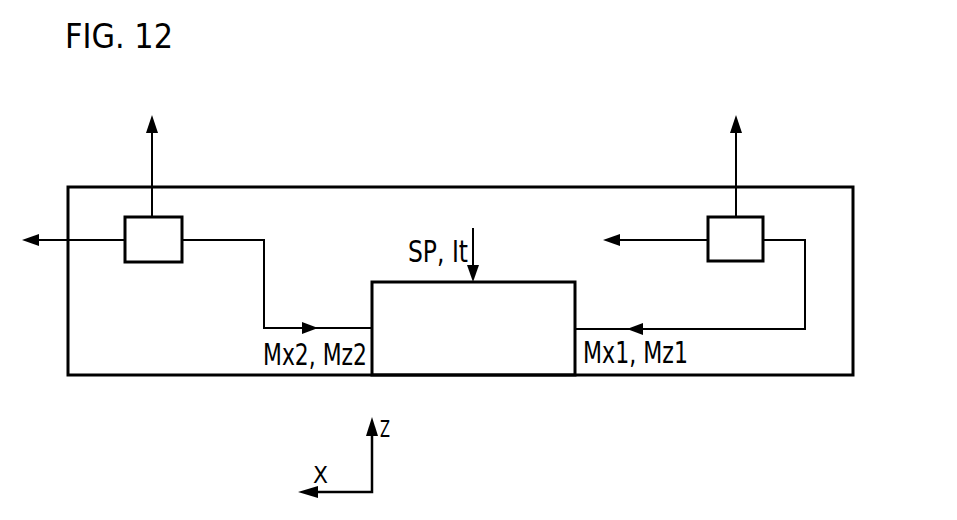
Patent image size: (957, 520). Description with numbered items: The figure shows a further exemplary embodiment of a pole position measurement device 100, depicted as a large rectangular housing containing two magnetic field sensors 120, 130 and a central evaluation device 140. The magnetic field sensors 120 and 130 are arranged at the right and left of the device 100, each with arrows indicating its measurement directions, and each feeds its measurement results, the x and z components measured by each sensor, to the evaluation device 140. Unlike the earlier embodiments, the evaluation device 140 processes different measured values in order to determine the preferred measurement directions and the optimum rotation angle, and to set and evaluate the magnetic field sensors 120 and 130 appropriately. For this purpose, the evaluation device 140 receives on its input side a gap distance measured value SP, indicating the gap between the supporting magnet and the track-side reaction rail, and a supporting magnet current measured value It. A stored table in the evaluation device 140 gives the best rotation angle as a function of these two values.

The pole position measurement device 100 is at (117, 376).
The magnetic field sensor 120 is at (749, 217).
The magnetic field sensor 130 is at (135, 217).
The evaluation device 140 is at (551, 282).